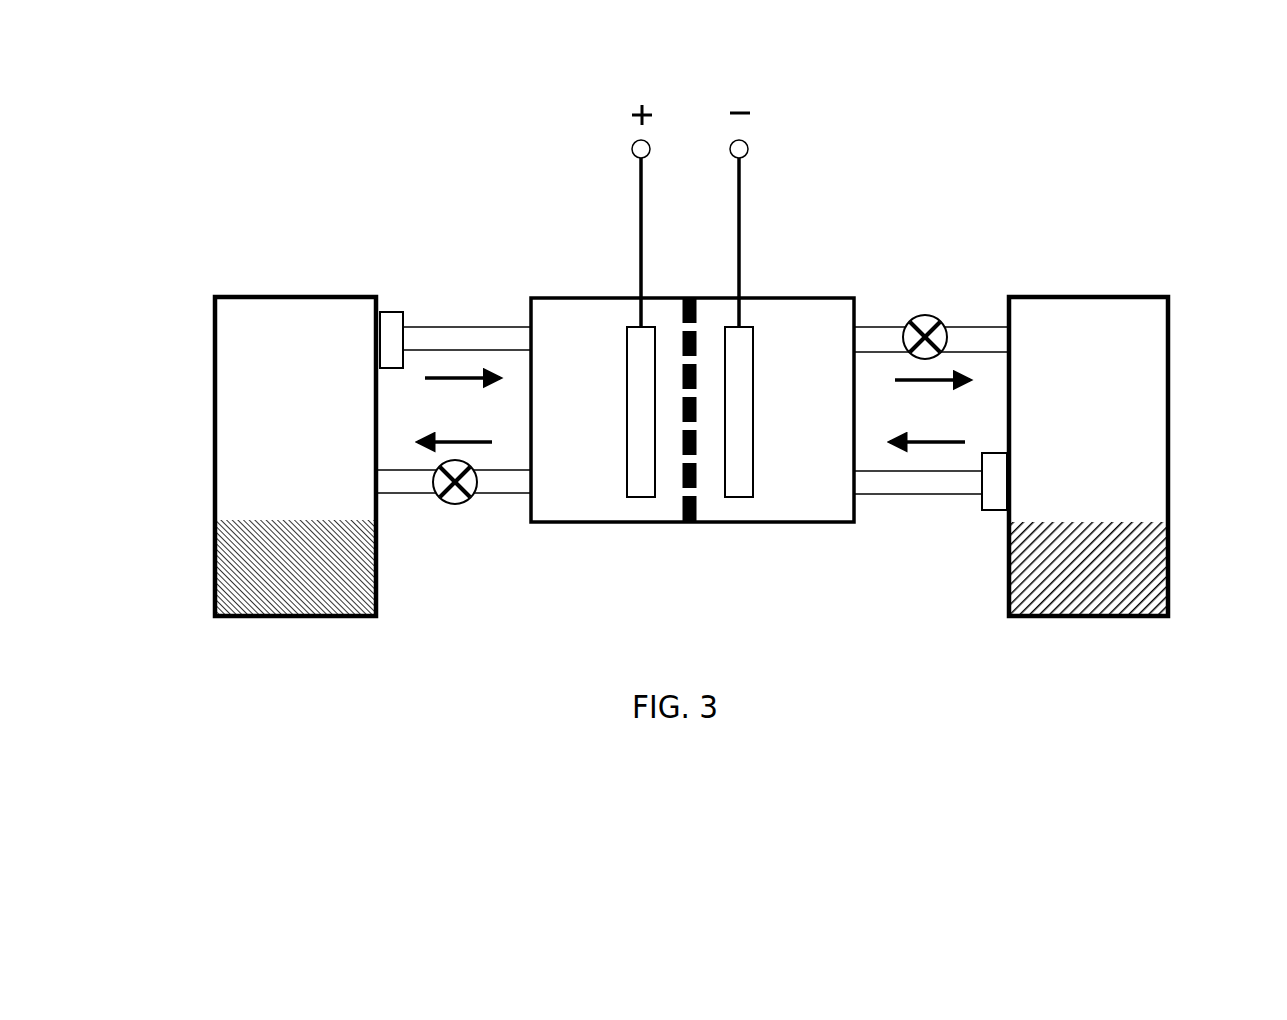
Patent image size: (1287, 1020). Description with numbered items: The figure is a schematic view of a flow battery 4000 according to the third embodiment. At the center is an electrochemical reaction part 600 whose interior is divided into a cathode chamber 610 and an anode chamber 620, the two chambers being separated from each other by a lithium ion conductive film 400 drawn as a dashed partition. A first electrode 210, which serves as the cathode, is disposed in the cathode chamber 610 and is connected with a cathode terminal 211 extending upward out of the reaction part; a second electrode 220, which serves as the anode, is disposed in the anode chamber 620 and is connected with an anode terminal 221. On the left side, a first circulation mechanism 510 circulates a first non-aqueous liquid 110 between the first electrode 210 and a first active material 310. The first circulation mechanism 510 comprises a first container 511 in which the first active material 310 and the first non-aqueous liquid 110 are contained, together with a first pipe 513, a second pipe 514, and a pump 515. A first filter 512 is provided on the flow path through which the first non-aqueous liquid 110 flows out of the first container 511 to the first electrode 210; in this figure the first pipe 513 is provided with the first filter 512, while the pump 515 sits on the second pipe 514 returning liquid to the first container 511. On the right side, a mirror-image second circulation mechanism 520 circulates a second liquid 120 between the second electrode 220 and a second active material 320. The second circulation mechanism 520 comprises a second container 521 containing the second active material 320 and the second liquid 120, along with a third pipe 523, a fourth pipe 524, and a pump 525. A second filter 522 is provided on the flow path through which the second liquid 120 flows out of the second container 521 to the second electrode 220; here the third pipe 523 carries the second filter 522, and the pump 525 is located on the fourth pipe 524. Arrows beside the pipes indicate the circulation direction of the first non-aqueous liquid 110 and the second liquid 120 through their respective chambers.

The flow battery 4000 is at (657, 49).
The first non-aqueous liquid 110 is at (459, 410).
The second liquid 120 is at (930, 411).
The first electrode 210 is at (640, 480).
The cathode terminal 211 is at (630, 146).
The second electrode 220 is at (740, 480).
The anode terminal 221 is at (750, 146).
The first active material 310 is at (240, 553).
The second active material 320 is at (1153, 557).
The lithium ion conductive film 400 is at (690, 322).
The first circulation mechanism 510 is at (326, 250).
The first container 511 is at (232, 322).
The first filter 512 is at (392, 322).
The first pipe 513 is at (462, 342).
The second pipe 514 is at (500, 484).
The pump 515 is at (452, 505).
The second circulation mechanism 520 is at (1050, 250).
The second container 521 is at (1150, 325).
The second filter 522 is at (990, 500).
The third pipe 523 is at (918, 482).
The fourth pipe 524 is at (878, 342).
The pump 525 is at (925, 315).
The electrochemical reaction part 600 is at (813, 523).
The cathode chamber 610 is at (578, 322).
The anode chamber 620 is at (803, 322).